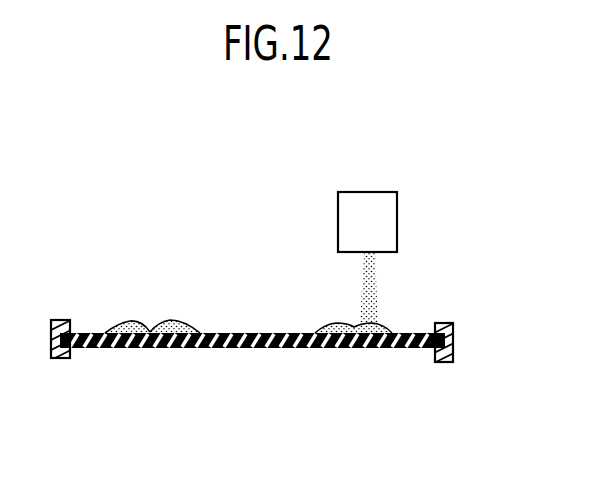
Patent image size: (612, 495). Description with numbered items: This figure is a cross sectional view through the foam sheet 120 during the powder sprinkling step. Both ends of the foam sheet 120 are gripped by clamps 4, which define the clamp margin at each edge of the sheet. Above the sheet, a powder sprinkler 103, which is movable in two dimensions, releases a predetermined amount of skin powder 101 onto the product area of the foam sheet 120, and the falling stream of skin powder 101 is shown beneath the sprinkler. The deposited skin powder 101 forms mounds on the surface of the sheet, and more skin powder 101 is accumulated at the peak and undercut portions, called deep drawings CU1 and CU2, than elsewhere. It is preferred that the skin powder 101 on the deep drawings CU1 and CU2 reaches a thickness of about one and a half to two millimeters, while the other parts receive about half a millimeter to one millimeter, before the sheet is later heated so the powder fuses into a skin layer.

The skin powder 101 is at (148, 331).
The powder sprinkler 103 is at (390, 206).
The foam sheet 120 is at (273, 348).
The clamps 4 is at (453, 325).
The deep drawing CU1 is at (130, 326).
The deep drawing CU2 is at (174, 324).